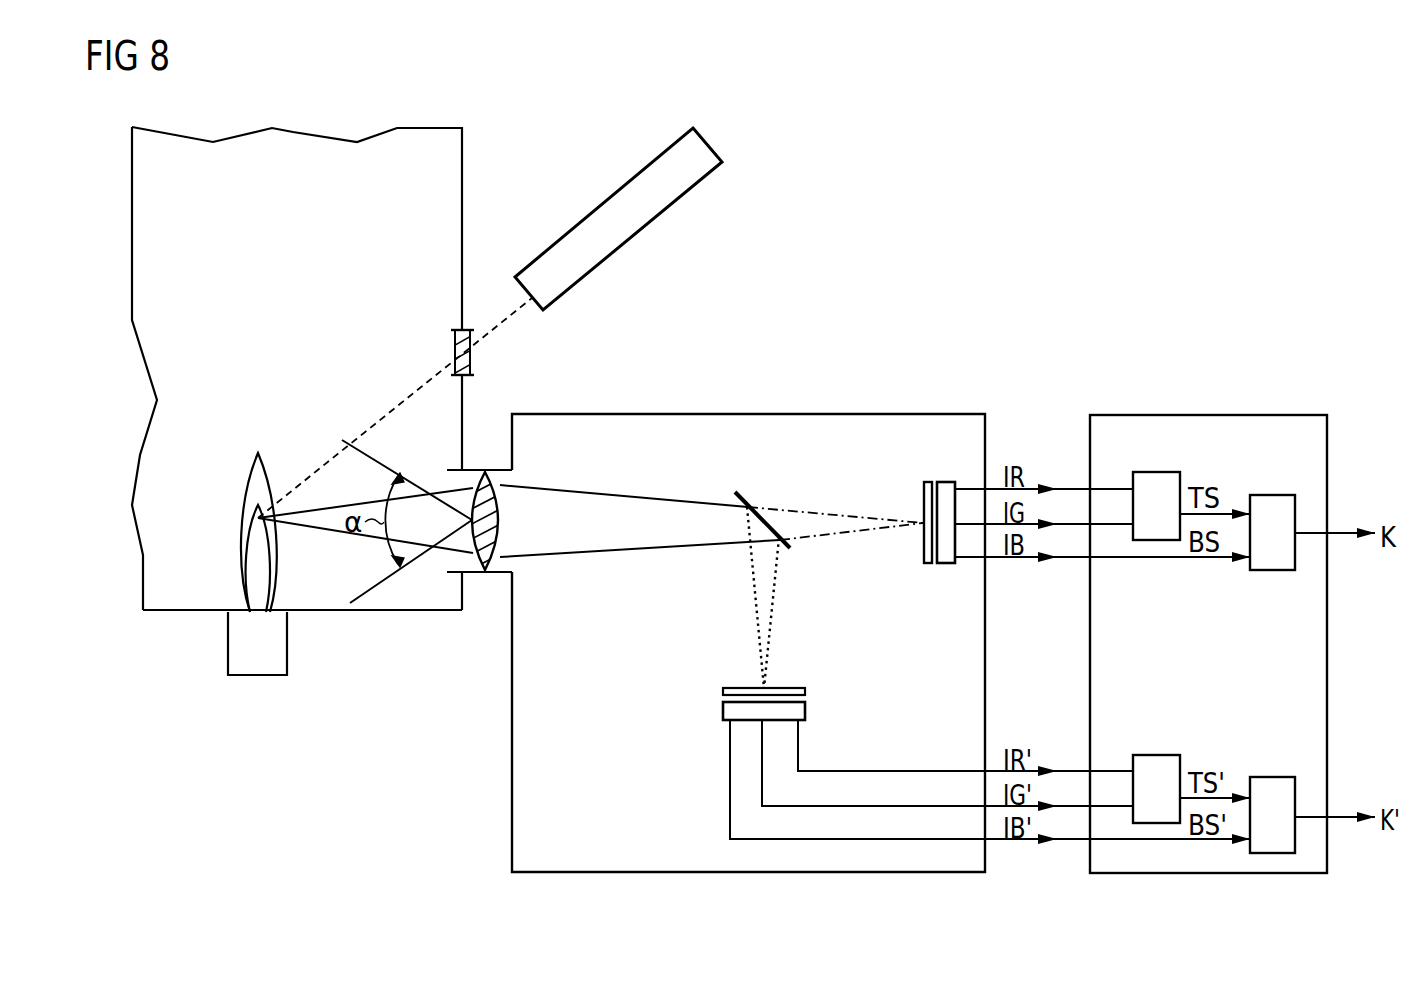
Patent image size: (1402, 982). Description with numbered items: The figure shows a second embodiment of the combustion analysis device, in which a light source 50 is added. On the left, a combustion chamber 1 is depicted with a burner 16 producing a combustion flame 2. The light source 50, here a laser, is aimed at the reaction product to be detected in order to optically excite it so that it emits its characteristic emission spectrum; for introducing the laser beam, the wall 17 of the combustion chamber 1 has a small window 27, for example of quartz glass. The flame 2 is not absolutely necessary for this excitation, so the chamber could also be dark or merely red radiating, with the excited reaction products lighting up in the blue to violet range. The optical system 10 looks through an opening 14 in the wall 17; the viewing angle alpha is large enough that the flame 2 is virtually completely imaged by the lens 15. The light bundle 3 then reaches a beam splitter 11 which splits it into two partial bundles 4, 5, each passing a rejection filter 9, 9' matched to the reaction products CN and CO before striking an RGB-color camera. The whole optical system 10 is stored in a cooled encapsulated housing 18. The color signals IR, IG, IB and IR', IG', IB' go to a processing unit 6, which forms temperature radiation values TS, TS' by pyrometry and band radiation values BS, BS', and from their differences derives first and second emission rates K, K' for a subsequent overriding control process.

The combustion chamber 1 is at (323, 143).
The combustion flame 2 is at (258, 483).
The light beam 3 is at (625, 540).
The incoming light bundle 4 is at (827, 518).
The incoming light bundle 5 is at (760, 588).
The processing unit 6 is at (1195, 413).
The rejection filter 9 is at (928, 493).
The rejection filter 9' is at (791, 689).
The optical system 10 is at (900, 370).
The beam splitter 11 is at (770, 510).
The opening 14 is at (424, 482).
The lens 15 is at (486, 471).
The burner 16 is at (263, 677).
The wall 17 is at (410, 614).
The cooled encapsulated housing 18 is at (790, 413).
The window 27 is at (470, 362).
The light source 50 is at (678, 140).